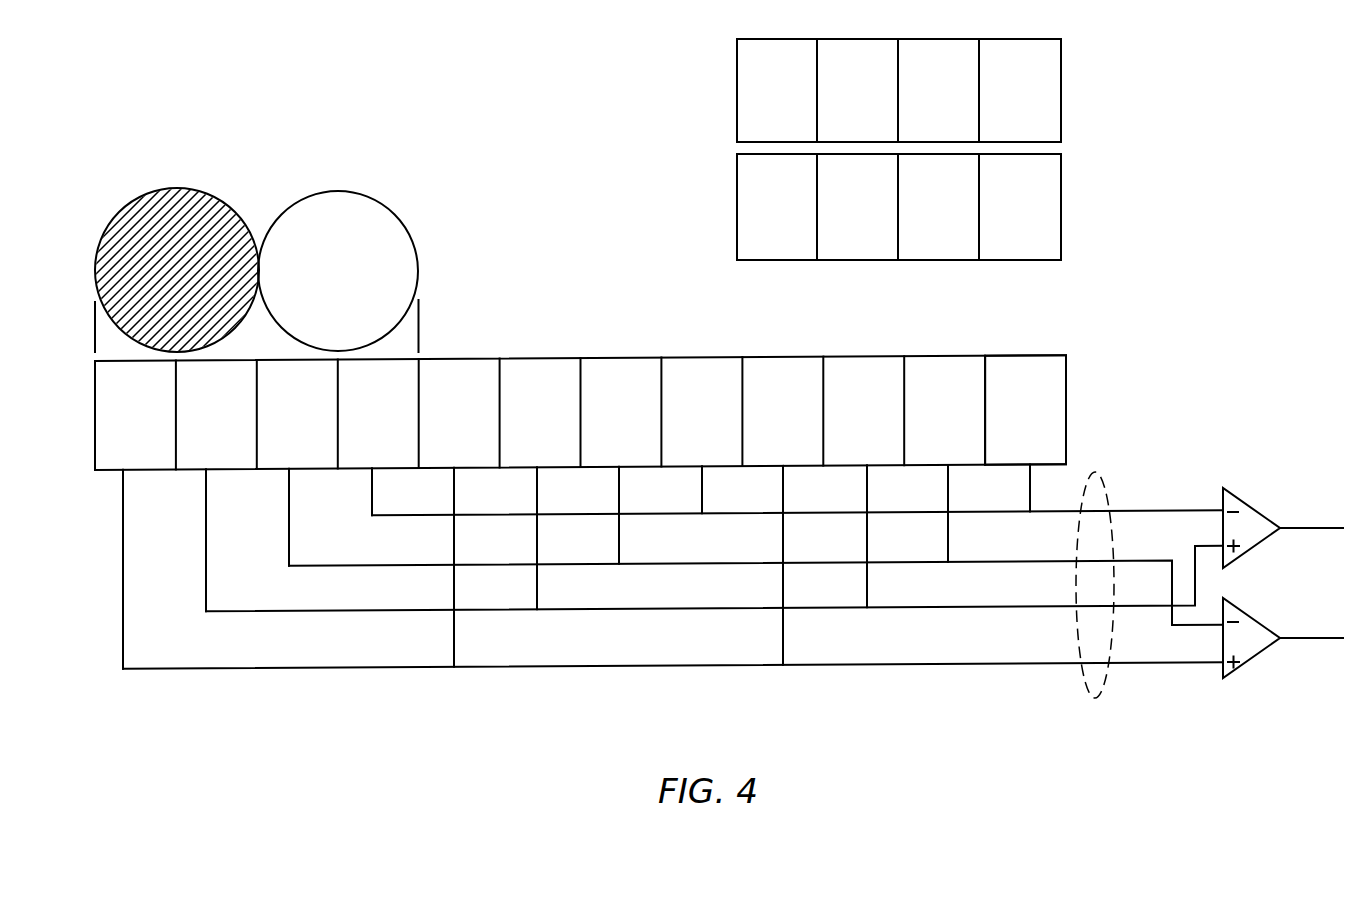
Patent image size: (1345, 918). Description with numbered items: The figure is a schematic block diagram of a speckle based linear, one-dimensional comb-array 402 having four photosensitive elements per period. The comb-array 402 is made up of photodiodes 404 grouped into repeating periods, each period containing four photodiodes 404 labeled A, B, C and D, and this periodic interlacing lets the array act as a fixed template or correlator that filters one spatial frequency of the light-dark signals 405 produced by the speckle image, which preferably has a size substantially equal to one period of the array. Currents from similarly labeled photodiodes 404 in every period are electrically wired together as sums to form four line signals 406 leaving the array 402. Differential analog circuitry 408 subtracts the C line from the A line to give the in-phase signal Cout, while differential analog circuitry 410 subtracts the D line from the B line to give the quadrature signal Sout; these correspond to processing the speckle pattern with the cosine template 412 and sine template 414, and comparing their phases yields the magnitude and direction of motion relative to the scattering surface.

The 1D comb-array 402 is at (1116, 402).
The photodiodes 404 is at (1021, 356).
The light-dark signals 405 is at (446, 267).
The line signals 406 is at (1098, 475).
The differential analog circuitry 408 is at (1248, 663).
The differential analog circuitry 410 is at (1248, 503).
The cosine template 412 is at (630, 92).
The sine template 414 is at (630, 199).